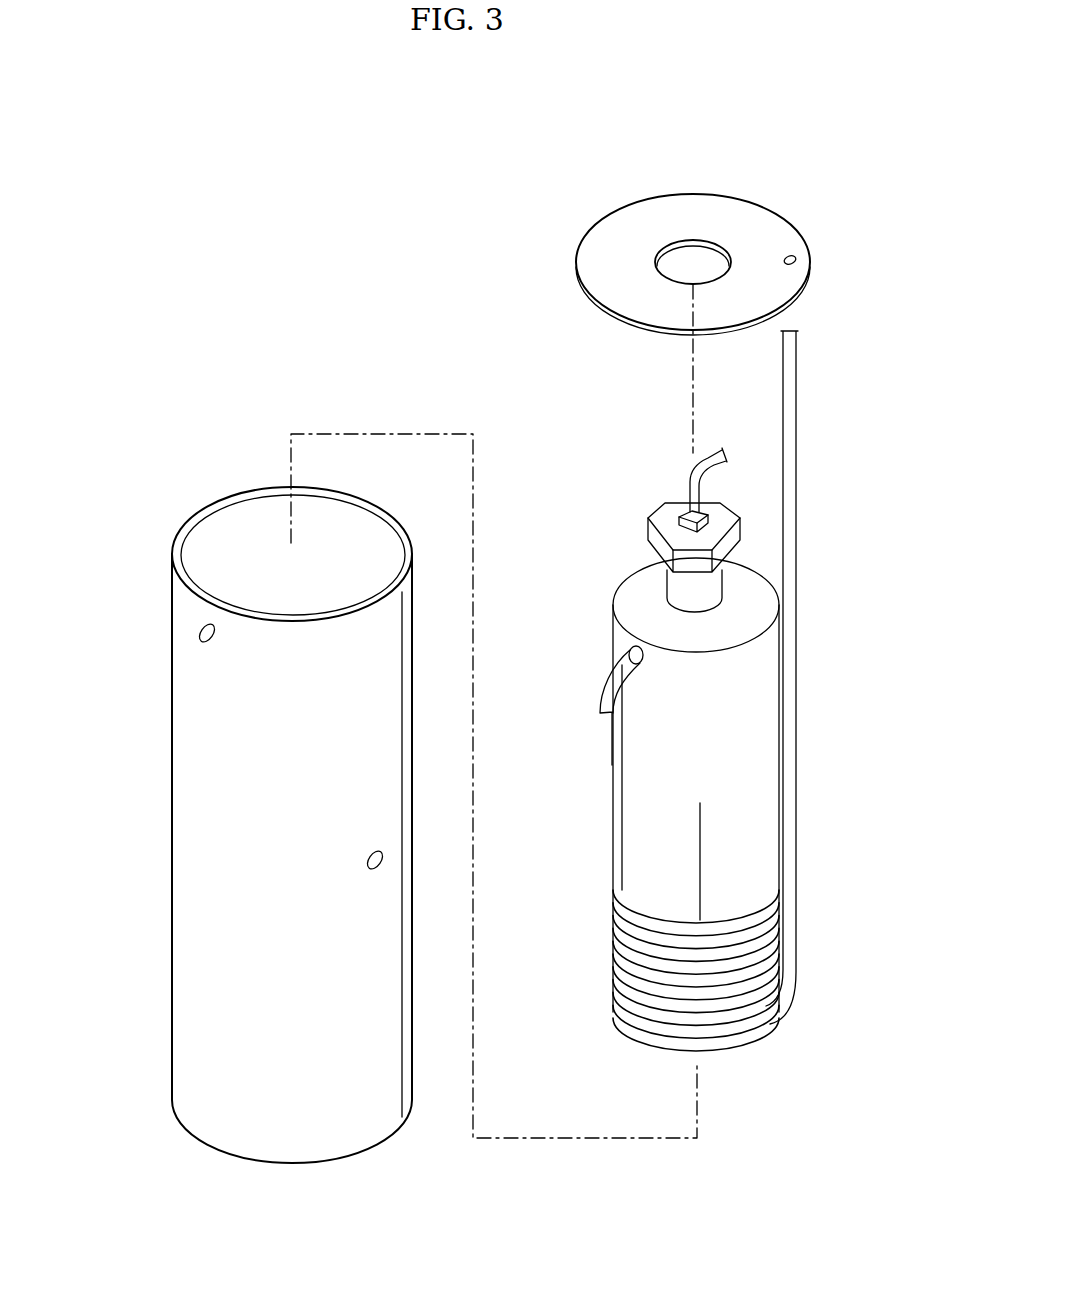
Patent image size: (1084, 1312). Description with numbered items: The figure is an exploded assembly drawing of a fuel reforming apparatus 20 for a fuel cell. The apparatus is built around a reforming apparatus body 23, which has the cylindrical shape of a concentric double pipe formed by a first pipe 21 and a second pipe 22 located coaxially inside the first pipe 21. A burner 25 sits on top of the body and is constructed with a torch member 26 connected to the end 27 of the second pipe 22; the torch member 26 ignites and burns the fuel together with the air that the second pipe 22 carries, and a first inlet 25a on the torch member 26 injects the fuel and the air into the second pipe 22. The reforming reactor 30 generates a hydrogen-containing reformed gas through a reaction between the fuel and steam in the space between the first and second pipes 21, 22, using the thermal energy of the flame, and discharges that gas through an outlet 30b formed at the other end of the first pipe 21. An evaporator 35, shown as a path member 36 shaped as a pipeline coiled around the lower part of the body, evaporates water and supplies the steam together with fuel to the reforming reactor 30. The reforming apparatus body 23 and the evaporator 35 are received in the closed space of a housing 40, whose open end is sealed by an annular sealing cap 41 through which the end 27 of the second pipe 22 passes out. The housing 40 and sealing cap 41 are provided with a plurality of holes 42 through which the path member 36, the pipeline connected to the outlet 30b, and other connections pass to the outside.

The fuel reforming apparatus 20 is at (518, 158).
The first pipe 21 is at (620, 633).
The second pipe 22 is at (677, 585).
The reforming apparatus body 23 is at (642, 785).
The burner 25 is at (628, 533).
The first inlet 25a is at (683, 513).
The torch member 26 is at (665, 516).
The end of second pipe 27 is at (723, 513).
The reforming reactor 30 is at (676, 662).
The outlet 30b is at (630, 644).
The evaporator 35 is at (600, 990).
The path member 36 is at (747, 1030).
The housing 40 is at (147, 932).
The sealing cap 41 is at (728, 214).
The holes 42 is at (798, 260).